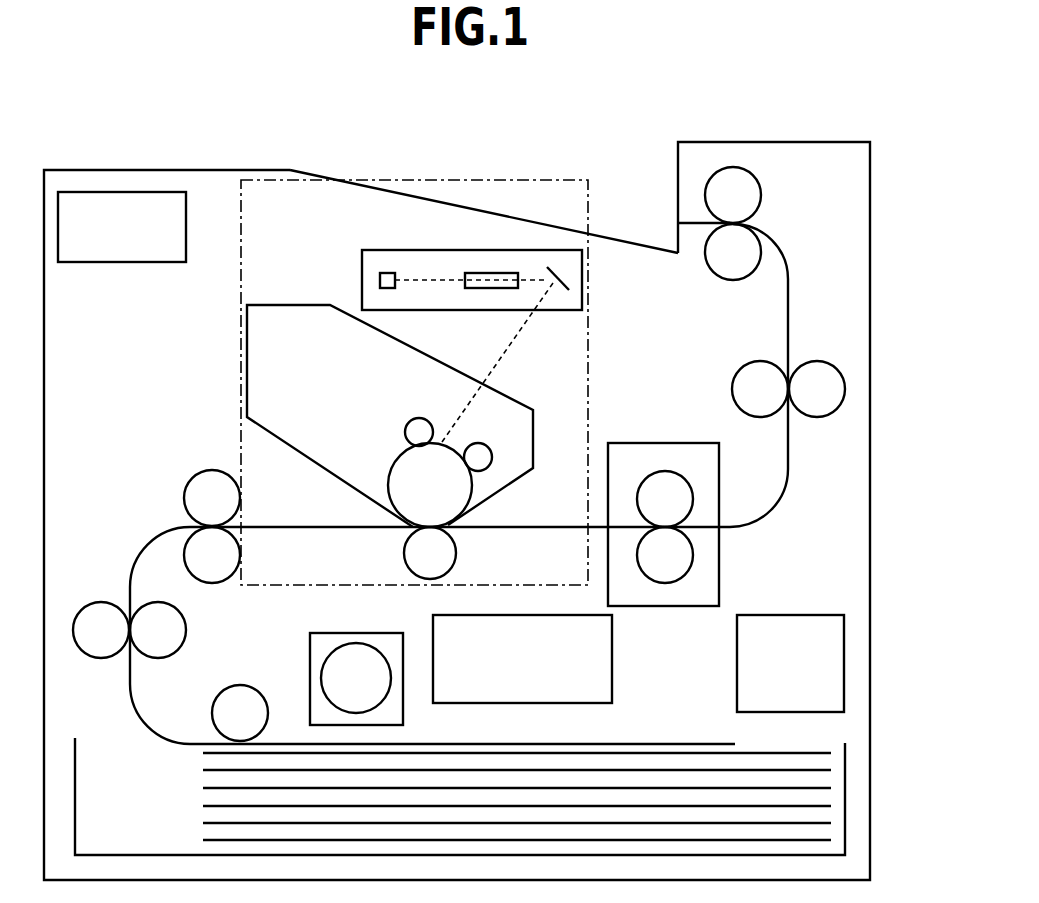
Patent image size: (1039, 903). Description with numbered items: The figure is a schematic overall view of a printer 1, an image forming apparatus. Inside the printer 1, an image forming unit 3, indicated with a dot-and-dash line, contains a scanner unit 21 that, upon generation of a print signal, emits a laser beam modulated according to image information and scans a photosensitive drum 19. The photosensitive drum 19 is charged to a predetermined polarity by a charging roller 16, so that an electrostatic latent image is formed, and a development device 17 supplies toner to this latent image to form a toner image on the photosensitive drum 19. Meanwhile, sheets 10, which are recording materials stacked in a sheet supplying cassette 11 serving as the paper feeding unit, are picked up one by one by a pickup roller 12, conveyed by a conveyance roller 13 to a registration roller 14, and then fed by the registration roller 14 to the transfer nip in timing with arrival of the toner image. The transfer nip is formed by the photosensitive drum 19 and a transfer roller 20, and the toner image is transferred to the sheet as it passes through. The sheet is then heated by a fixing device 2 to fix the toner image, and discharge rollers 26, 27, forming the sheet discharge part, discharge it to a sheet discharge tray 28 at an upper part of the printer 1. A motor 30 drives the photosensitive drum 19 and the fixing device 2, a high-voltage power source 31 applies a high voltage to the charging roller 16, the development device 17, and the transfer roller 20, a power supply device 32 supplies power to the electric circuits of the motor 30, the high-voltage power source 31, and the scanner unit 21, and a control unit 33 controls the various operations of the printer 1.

The printer 1 is at (784, 142).
The fixing device 2 is at (662, 443).
The image forming unit 3 is at (241, 340).
The sheets 10 is at (680, 752).
The sheet supplying cassette 11 is at (845, 797).
The pickup roller 12 is at (240, 685).
The conveyance roller 13 is at (103, 602).
The registration roller 14 is at (213, 470).
The charging roller 16 is at (481, 444).
The development device 17 is at (418, 418).
The photosensitive drum 19 is at (407, 465).
The transfer roller 20 is at (457, 553).
The scanner unit 21 is at (362, 272).
The discharge roller 26 is at (762, 361).
The discharge roller 27 is at (762, 195).
The sheet discharge tray 28 is at (655, 243).
The motor 30 is at (324, 652).
The high-voltage power source 31 is at (612, 645).
The power supply device 32 is at (800, 615).
The control unit 33 is at (125, 263).